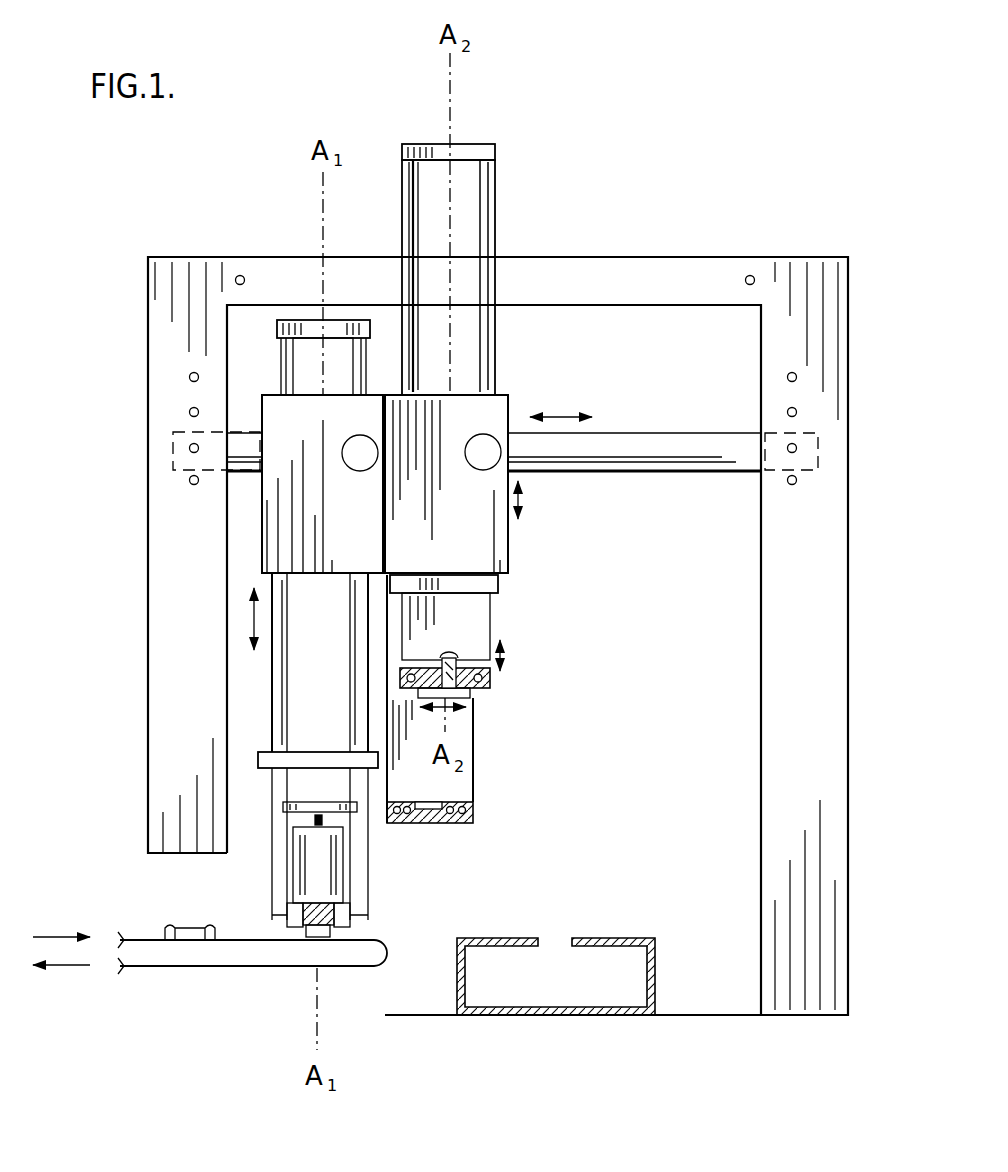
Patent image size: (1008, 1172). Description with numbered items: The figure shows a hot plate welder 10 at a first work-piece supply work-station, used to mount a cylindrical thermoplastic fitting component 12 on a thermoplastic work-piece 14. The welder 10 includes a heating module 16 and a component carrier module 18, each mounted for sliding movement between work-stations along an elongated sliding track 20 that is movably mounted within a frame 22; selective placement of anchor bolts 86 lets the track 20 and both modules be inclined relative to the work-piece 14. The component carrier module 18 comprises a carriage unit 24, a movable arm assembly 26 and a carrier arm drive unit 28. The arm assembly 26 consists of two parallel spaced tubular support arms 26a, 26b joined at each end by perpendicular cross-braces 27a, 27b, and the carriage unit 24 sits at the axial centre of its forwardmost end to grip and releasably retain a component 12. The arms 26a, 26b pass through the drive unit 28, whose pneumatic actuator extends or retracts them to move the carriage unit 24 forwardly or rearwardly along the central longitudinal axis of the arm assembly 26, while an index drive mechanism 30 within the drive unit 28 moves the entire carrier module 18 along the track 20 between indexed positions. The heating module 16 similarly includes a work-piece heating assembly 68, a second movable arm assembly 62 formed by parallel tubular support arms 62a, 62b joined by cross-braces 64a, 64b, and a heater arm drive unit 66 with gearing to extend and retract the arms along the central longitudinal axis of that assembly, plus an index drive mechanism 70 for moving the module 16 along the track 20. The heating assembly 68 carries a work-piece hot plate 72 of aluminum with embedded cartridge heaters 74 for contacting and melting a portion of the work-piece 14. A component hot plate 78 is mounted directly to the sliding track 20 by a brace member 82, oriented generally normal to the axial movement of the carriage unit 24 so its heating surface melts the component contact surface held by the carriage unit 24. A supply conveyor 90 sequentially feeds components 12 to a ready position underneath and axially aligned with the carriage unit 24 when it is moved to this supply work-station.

The hot plate welder 10 is at (576, 668).
The component 12 is at (172, 925).
The work-piece 14 is at (655, 970).
The heating module 16 is at (514, 536).
The component carrier module 18 is at (255, 518).
The sliding track 20 is at (663, 450).
The frame 22 is at (683, 292).
The carriage unit 24 is at (342, 856).
The movable arm assembly 26 is at (271, 670).
The tubular support arm 26a is at (363, 585).
The tubular support arm 26b is at (284, 648).
The cross-brace 27a is at (316, 764).
The cross-brace 27b is at (300, 320).
The carrier arm drive unit 28 is at (265, 418).
The index drive mechanism 30 is at (362, 455).
The second movable arm assembly 62 is at (500, 182).
The tubular support arm 62a is at (493, 248).
The tubular support arm 62b is at (404, 203).
The cross-brace 64a is at (500, 590).
The cross-brace 64b is at (482, 148).
The heater arm drive unit 66 is at (512, 411).
The work-piece heating assembly 68 is at (496, 643).
The index drive mechanism 70 is at (484, 460).
The work-piece hot plate 72 is at (491, 682).
The cartridge heater 74 is at (478, 692).
The component hot plate 78 is at (473, 816).
The brace member 82 is at (472, 752).
The anchor bolt 86 is at (176, 446).
The supply conveyor 90 is at (167, 968).